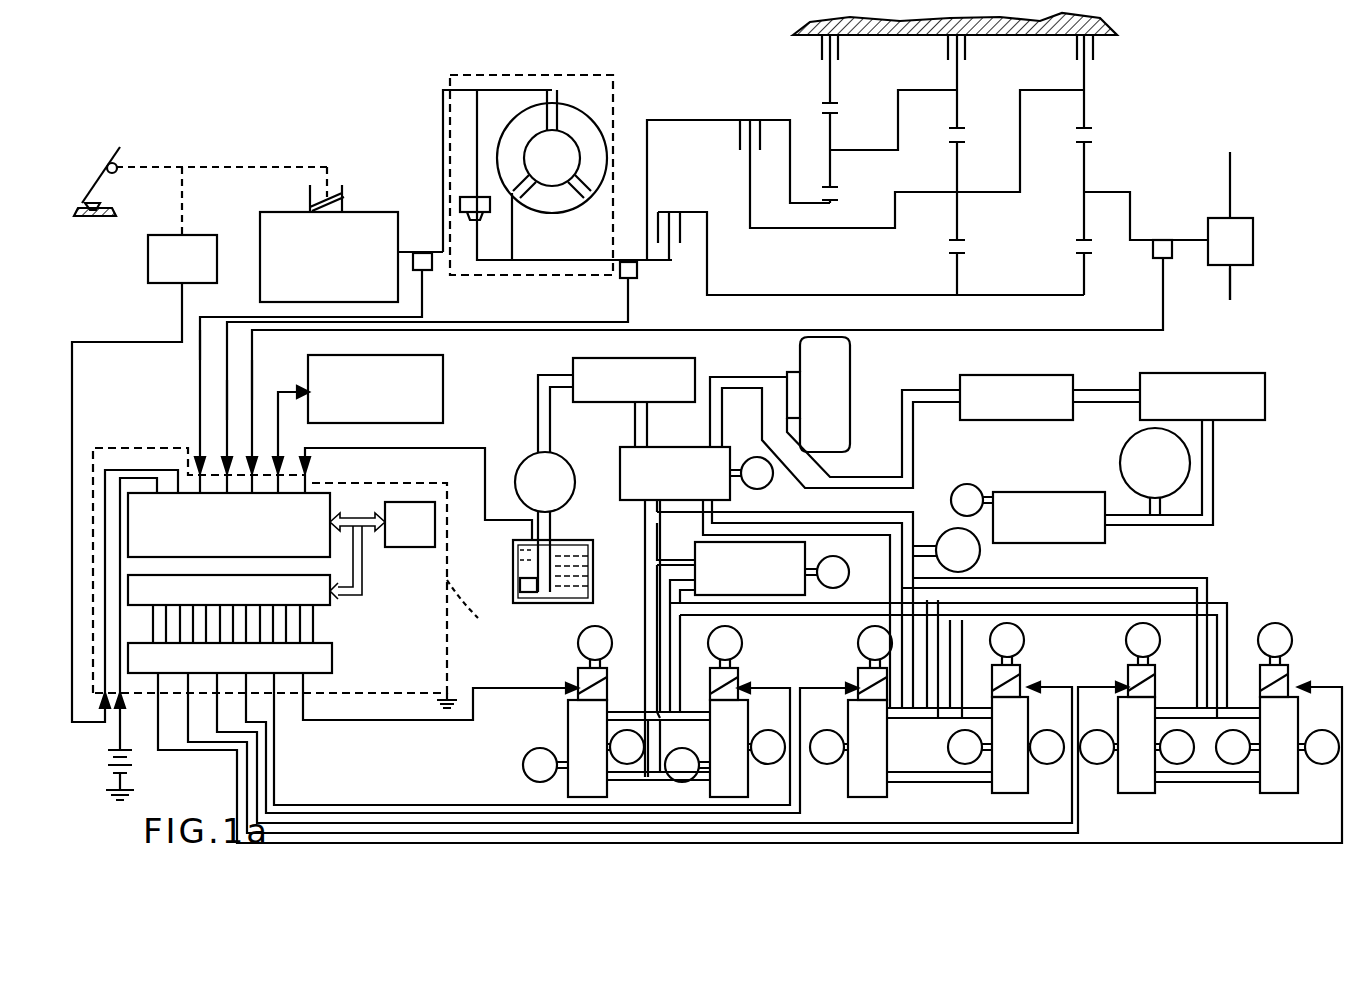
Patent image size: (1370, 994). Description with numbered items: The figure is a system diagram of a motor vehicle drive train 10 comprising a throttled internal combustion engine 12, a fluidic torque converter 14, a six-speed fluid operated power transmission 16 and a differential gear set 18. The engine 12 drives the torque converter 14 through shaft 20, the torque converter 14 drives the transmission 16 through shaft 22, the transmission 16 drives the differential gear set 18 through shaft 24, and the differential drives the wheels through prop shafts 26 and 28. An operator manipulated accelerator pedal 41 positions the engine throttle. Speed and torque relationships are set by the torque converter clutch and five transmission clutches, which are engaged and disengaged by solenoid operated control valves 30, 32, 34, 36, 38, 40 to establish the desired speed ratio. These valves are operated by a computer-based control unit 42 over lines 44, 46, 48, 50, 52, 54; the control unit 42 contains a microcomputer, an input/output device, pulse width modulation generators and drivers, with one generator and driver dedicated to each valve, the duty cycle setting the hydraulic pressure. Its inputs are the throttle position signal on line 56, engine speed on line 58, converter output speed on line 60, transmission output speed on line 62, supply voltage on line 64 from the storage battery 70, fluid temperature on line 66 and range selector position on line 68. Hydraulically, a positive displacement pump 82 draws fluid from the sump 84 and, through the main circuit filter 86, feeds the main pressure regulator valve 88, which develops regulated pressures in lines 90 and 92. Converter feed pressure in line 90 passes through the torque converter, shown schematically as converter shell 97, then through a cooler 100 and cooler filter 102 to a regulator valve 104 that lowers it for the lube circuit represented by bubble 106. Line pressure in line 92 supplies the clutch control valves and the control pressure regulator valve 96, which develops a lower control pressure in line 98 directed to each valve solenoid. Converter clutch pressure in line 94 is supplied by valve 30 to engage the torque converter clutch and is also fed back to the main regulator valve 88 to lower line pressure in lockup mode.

The motor vehicle drive train 10 is at (366, 128).
The throttled internal combustion engine 12 is at (365, 220).
The fluidic torque converter 14 is at (450, 76).
The six-speed fluid operated power transmission 16 is at (738, 106).
The differential gear set 18 is at (1213, 255).
The shaft 20 is at (443, 234).
The shaft 22 is at (642, 266).
The shaft 24 is at (1131, 215).
The prop shaft 26 is at (1236, 177).
The prop shaft 28 is at (1235, 282).
The solenoid operated control valve 30 is at (849, 727).
The solenoid operated control valve 32 is at (576, 737).
The solenoid operated control valve 34 is at (749, 722).
The solenoid operated control valve 36 is at (1018, 770).
The solenoid operated control valve 38 is at (1140, 790).
The solenoid operated control valve 40 is at (1285, 790).
The accelerator pedal 41 is at (108, 168).
The computer-based control unit 42 is at (294, 557).
The line 44 is at (274, 733).
The line 46 is at (355, 722).
The line 48 is at (392, 805).
The line 50 is at (266, 753).
The line 52 is at (188, 698).
The line 54 is at (237, 800).
The line 56 is at (73, 455).
The line 58 is at (200, 345).
The line 60 is at (227, 402).
The line 62 is at (253, 382).
The line 64 is at (123, 722).
The line 66 is at (446, 450).
The line 68 is at (278, 428).
The storage battery 70 is at (108, 758).
The positive displacement pump 82 is at (569, 478).
The sump 84 is at (513, 596).
The main circuit filter 86 is at (617, 363).
The main pressure regulator valve 88 is at (704, 458).
The line 90 is at (742, 377).
The line 92 is at (648, 594).
The line 94 is at (768, 530).
The control pressure regulator valve 96 is at (758, 605).
The converter shell 97 is at (821, 377).
The line 98 is at (650, 656).
The cooler 100 is at (1010, 380).
The cooler filter 102 is at (1250, 390).
The regulator valve 104 is at (1096, 520).
The bubble 106 is at (1148, 442).